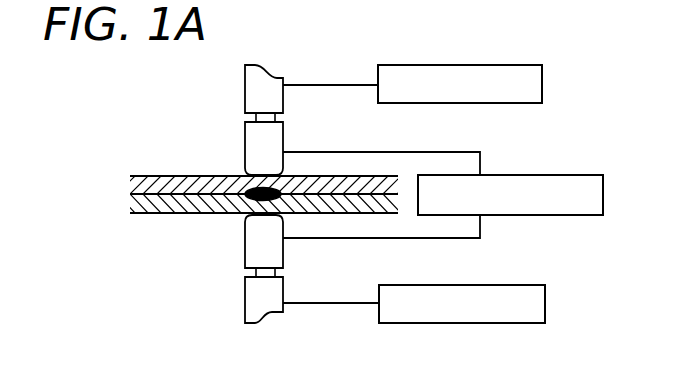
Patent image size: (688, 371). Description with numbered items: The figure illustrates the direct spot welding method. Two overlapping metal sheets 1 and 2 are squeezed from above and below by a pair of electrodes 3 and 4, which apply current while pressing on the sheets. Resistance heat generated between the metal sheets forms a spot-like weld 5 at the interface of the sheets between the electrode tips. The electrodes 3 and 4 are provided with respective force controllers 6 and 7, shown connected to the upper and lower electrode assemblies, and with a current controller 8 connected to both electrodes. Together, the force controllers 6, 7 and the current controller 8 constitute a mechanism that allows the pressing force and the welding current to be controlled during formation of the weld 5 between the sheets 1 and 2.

The metal sheet 1 is at (176, 178).
The metal sheet 2 is at (178, 212).
The electrode 3 is at (245, 140).
The electrode 4 is at (245, 258).
The spot-like weld 5 is at (243, 215).
The force controller 6 is at (423, 65).
The force controller 7 is at (425, 285).
The current controller 8 is at (500, 175).